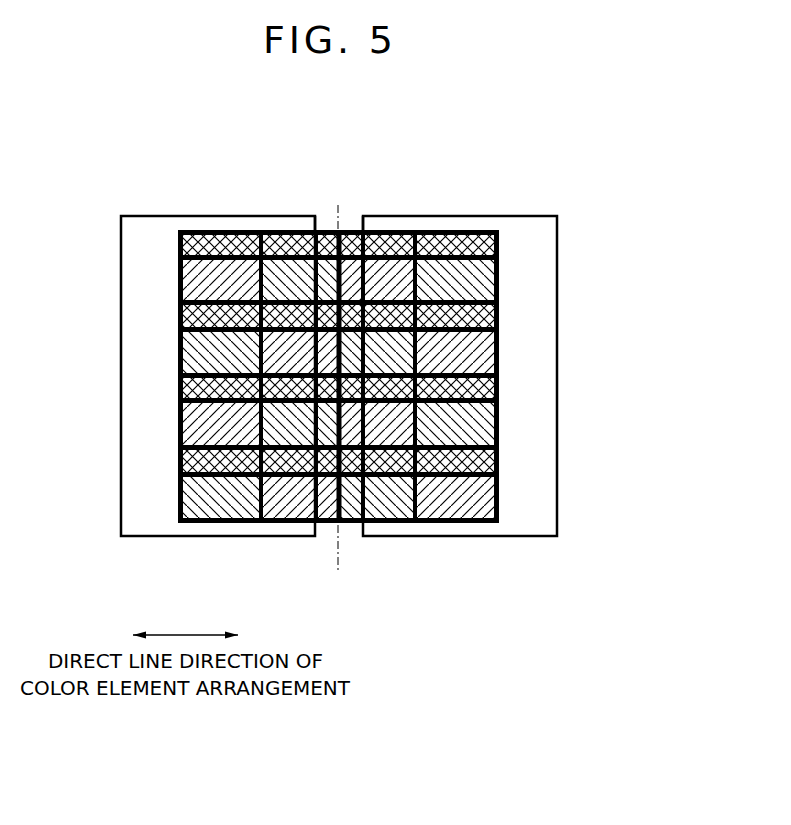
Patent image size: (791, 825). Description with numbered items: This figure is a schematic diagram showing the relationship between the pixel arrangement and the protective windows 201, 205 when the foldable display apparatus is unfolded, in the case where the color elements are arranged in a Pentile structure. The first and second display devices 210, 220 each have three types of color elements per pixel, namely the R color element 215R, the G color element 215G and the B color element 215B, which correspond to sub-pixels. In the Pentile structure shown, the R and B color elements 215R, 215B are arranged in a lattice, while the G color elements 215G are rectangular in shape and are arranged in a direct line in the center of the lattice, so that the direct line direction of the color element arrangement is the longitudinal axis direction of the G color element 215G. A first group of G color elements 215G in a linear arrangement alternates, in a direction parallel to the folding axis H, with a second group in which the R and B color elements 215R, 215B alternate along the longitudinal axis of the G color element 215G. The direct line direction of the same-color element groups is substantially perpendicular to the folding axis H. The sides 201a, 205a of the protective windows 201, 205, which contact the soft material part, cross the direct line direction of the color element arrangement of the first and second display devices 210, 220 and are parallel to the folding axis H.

The protective window 201 is at (160, 537).
The protective window 205 is at (522, 537).
The side of protective window 201a is at (320, 220).
The side of protective window 205a is at (355, 220).
The first display device 210 is at (247, 526).
The second display device 220 is at (437, 526).
The R color element 215R is at (187, 278).
The G color element 215G is at (187, 319).
The B color element 215B is at (187, 360).
The folding axis H is at (338, 558).